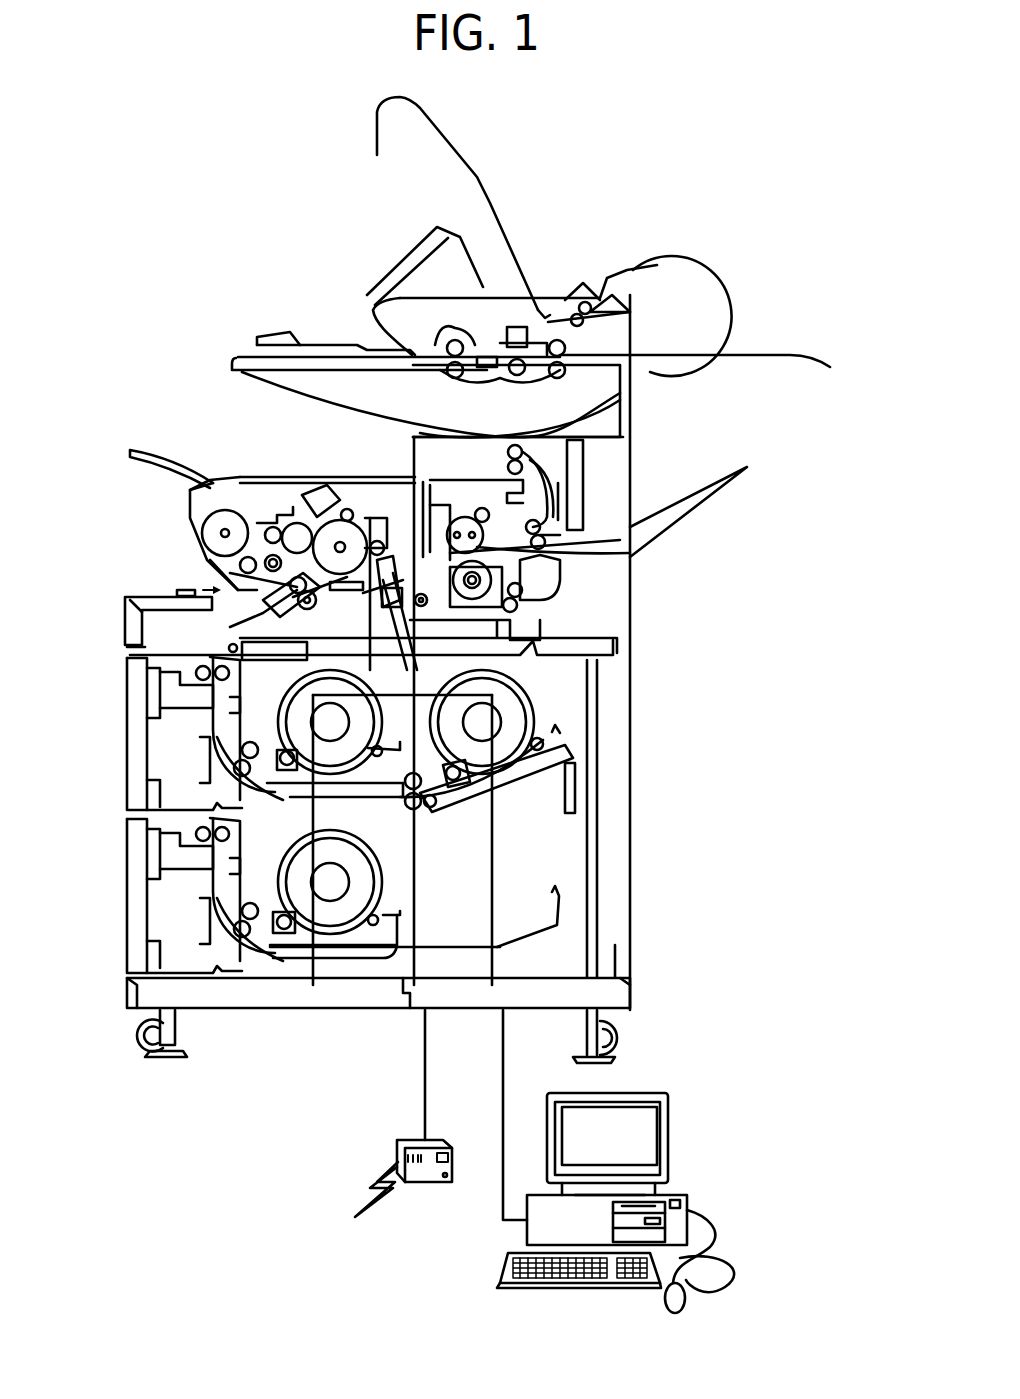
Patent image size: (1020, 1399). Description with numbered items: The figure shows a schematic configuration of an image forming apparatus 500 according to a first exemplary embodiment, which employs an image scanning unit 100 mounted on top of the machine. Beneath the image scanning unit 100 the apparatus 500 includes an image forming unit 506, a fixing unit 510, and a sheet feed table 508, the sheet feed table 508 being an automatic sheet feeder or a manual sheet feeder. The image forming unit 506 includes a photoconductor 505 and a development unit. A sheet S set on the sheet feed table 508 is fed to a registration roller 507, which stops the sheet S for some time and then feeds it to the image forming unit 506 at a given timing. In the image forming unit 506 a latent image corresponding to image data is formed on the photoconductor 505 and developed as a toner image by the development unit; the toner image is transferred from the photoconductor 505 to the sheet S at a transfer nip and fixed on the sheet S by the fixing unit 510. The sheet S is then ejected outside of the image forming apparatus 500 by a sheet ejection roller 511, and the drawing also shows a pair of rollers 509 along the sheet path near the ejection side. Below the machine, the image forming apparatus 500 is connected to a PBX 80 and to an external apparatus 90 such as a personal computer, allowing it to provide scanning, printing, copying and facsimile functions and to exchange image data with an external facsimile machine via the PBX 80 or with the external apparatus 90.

The image scanning unit 100 is at (497, 310).
The image forming apparatus 500 is at (220, 338).
The photoconductor 505 is at (358, 512).
The image forming unit 506 is at (284, 494).
The registration roller 507 is at (297, 523).
The sheet feed table 508 is at (155, 600).
The sheet discharge rollers 509 is at (507, 452).
The fixing unit 510 is at (410, 465).
The sheet ejection roller 511 is at (570, 497).
The sheet S is at (188, 582).
The PBX (private branch exchange) 80 is at (440, 1138).
The external apparatus 90 is at (673, 1117).